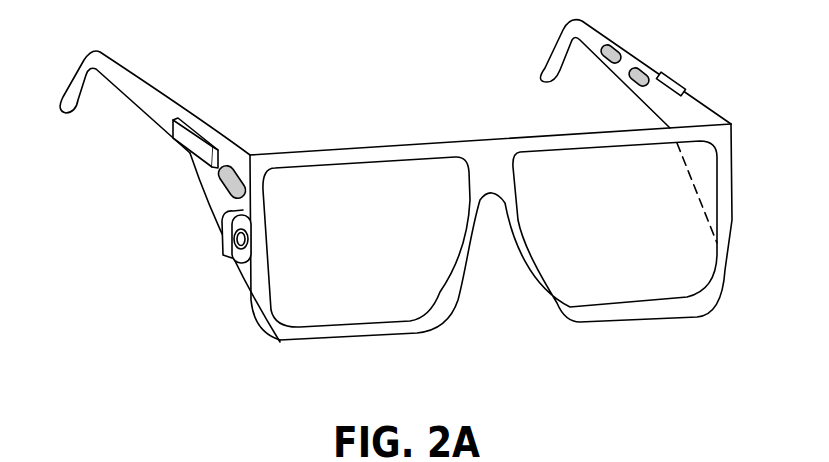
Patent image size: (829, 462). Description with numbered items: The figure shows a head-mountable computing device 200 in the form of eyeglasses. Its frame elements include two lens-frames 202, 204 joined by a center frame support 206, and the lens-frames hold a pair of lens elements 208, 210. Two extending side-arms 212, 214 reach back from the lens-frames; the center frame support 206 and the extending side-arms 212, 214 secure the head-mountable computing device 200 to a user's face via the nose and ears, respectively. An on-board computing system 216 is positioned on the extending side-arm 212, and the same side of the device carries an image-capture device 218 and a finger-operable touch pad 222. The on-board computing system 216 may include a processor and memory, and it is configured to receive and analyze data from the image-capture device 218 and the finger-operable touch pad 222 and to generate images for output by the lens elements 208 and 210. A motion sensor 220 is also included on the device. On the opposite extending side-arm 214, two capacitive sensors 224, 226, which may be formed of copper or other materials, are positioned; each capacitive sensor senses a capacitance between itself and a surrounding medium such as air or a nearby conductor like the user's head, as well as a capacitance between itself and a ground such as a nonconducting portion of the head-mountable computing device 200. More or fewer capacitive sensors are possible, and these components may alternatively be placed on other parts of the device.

The head-mountable computing device 200 is at (350, 55).
The lens-frame 202 is at (461, 237).
The lens-frame 204 is at (624, 79).
The center frame support 206 is at (492, 163).
The lens element 208 is at (315, 305).
The lens element 210 is at (632, 290).
The extending side-arm 212 is at (161, 126).
The extending side-arm 214 is at (637, 62).
The on-board computing system 216 is at (190, 140).
The image-capture device 218 is at (227, 228).
The motion sensor 220 is at (677, 82).
The finger-operable touch pad 222 is at (225, 182).
The capacitive sensor 224 is at (600, 57).
The capacitive sensor 226 is at (630, 78).